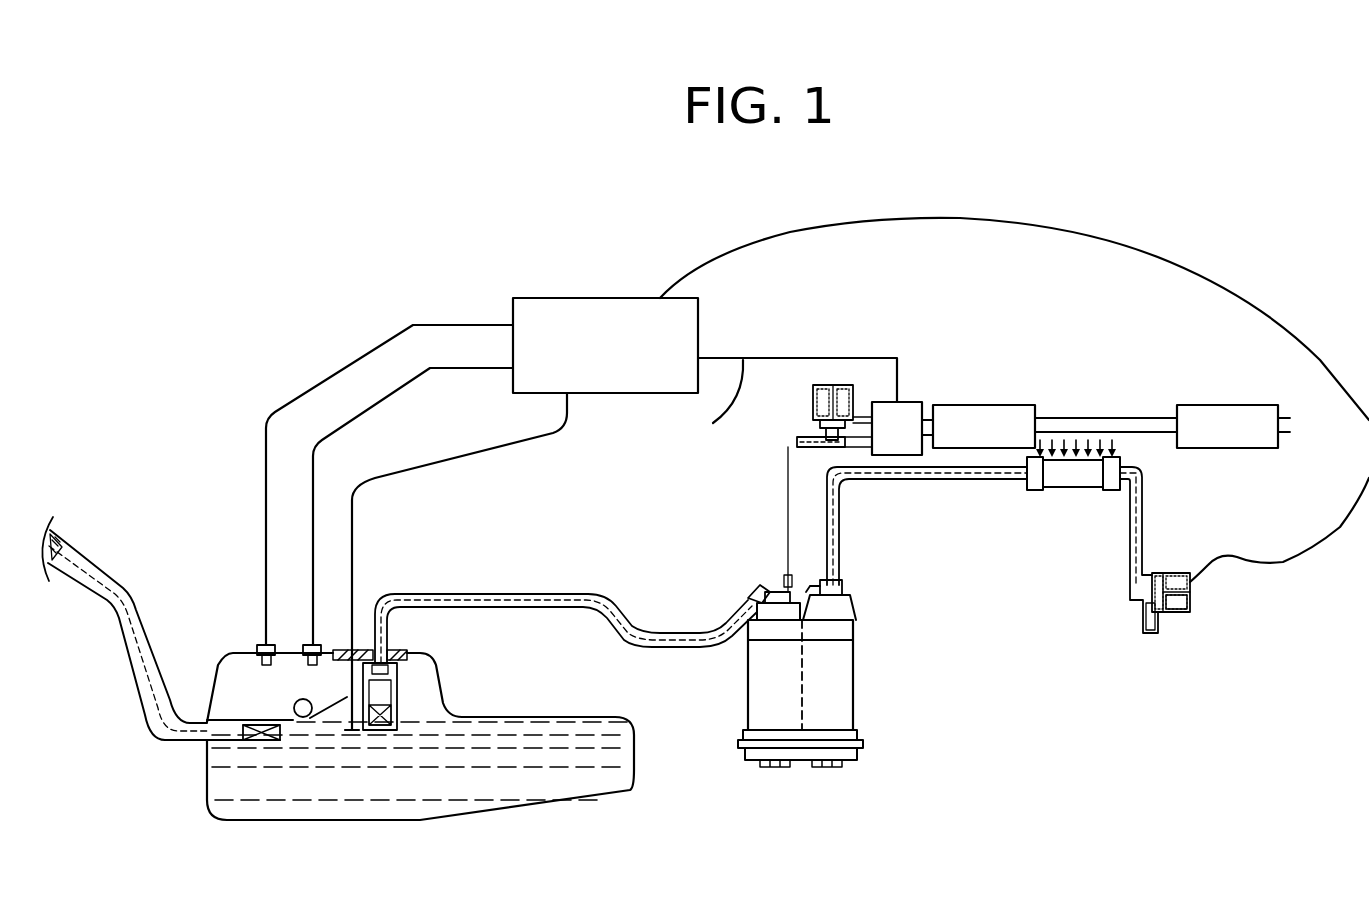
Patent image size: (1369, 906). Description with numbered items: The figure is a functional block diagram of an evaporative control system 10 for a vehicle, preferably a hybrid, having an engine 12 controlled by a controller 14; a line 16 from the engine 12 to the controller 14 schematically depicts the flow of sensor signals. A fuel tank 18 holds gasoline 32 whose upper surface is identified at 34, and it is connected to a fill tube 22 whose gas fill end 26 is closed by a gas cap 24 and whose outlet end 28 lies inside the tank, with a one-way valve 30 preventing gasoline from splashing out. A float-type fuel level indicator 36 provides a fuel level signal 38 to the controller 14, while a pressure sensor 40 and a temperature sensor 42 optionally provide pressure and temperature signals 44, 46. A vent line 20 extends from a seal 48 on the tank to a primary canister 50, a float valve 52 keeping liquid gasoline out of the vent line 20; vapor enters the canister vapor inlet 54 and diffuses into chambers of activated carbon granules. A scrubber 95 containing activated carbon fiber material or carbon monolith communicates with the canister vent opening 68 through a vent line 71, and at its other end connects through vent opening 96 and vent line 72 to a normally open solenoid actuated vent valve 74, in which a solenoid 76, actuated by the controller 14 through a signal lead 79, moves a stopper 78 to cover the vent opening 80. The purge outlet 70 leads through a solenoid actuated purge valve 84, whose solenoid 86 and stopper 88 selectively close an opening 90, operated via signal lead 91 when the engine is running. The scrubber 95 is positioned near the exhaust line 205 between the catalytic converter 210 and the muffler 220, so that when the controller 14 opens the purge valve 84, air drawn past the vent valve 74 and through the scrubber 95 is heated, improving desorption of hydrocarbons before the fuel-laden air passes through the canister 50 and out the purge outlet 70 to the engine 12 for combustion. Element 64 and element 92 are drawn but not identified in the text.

The evaporative control system 10 is at (226, 411).
The engine 12 is at (903, 402).
The controller 14 is at (692, 313).
The line 16 is at (823, 358).
The fuel tank 18 is at (593, 715).
The vent line 20 is at (503, 593).
The fill tube 22 is at (160, 658).
The gas cap 24 is at (54, 523).
The gas fill end 26 is at (67, 577).
The outlet end 28 is at (250, 741).
The one-way valve 30 is at (213, 737).
The gasoline 32 is at (600, 785).
The upper surface of the gasoline 34 is at (450, 713).
The float-type fuel level indicator 36 is at (292, 700).
The fuel level signal 38 is at (453, 463).
The pressure sensor 40 is at (320, 644).
The temperature sensor 42 is at (270, 647).
The pressure signal 44 is at (373, 405).
The temperature signal 46 is at (340, 370).
The seal 48 is at (397, 668).
The primary canister 50 is at (870, 710).
The float valve 52 is at (445, 716).
The canister vapor inlet 54 is at (755, 590).
The canister adsorbent bed 64 is at (805, 675).
The vent opening 68 is at (845, 583).
The purge outlet 70 is at (780, 590).
The vent line 71 is at (840, 513).
The vent line 72 is at (1142, 495).
The solenoid actuated vent valve 74 is at (1178, 565).
The solenoid 76 is at (1185, 612).
The stopper 78 is at (1143, 612).
The signal lead 79 is at (912, 216).
The vent opening 80 is at (1140, 590).
The solenoid actuated purge valve 84 is at (805, 406).
The solenoid 86 is at (857, 417).
The stopper 88 is at (817, 423).
The opening 90 is at (833, 450).
The signal lead 91 is at (712, 401).
The canister partition 92 is at (825, 637).
The scrubber 95 is at (1073, 490).
The vent opening 96 is at (1122, 484).
The exhaust line 205 is at (1290, 428).
The catalytic converter 210 is at (995, 404).
The muffler 220 is at (1200, 405).